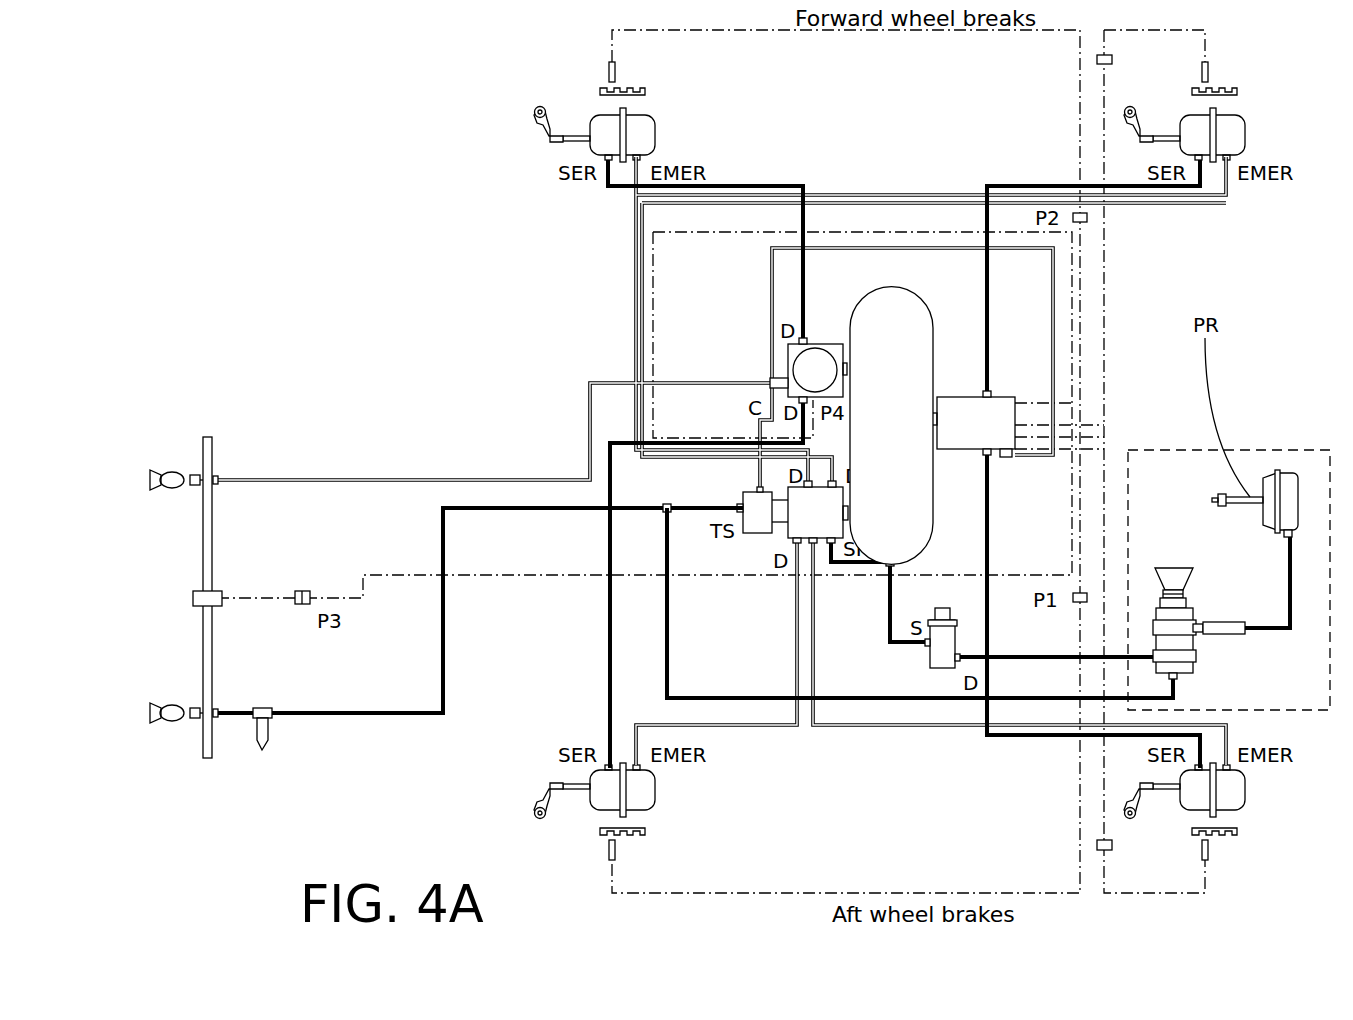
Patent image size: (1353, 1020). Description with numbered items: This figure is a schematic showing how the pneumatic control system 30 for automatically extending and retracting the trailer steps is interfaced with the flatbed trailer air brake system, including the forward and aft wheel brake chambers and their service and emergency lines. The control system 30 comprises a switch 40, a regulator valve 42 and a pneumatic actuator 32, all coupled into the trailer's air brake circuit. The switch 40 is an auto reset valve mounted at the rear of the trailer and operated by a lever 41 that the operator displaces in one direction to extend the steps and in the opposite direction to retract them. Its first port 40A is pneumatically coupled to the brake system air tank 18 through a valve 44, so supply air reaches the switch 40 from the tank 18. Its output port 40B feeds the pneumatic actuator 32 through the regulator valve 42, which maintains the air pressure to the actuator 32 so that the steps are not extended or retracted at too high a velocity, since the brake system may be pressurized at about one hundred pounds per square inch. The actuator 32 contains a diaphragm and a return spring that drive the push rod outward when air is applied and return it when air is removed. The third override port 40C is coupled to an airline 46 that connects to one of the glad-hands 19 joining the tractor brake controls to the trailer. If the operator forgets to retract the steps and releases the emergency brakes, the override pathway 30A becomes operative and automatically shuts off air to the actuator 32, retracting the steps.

The brake system air tank 18 is at (900, 280).
The glad-hands 19 is at (178, 735).
The pneumatic control system 30 is at (1187, 448).
The override pathway 30A is at (640, 632).
The pneumatic actuator 32 is at (1248, 482).
The switch 40 is at (1178, 555).
The first port 40A is at (1150, 647).
The output port 40B is at (1198, 615).
The third override port 40C is at (1195, 683).
The lever 41 is at (1165, 568).
The regulator valve 42 is at (1230, 612).
The valve 44 is at (912, 660).
The airline 46 is at (318, 722).